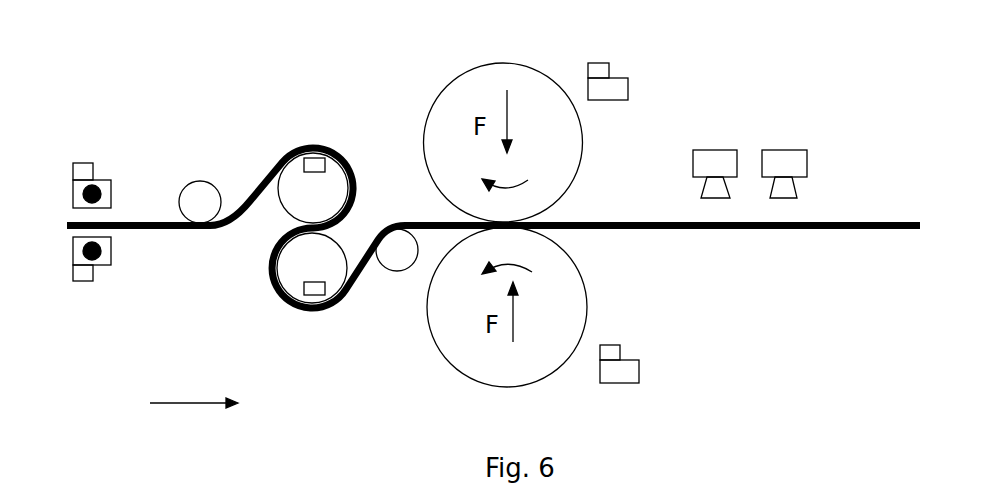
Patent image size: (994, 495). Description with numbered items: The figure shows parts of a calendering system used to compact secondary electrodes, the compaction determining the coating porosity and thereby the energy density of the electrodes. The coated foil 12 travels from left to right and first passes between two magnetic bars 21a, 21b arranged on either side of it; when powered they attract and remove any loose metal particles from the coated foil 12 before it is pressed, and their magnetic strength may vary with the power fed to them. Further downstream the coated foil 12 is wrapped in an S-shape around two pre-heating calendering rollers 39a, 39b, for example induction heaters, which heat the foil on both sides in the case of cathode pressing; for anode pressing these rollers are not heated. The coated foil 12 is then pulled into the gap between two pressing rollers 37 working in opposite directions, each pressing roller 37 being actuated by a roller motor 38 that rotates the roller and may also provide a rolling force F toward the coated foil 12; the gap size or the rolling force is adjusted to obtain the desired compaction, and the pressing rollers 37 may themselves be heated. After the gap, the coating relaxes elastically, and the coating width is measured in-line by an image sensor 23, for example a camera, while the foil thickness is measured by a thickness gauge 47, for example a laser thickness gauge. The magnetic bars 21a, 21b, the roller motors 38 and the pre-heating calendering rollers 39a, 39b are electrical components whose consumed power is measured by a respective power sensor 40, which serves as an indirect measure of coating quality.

The coated foil 12 is at (163, 229).
The magnetic bar 21a is at (105, 187).
The magnetic bar 21b is at (105, 266).
The power sensor 40 is at (84, 172).
The pre-heating calendering roller 39a is at (336, 204).
The pre-heating calendering roller 39b is at (336, 277).
The pressing roller 37 is at (442, 101).
The roller motor 38 is at (620, 85).
The image sensor 23 is at (712, 162).
The thickness gauge 47 is at (787, 162).